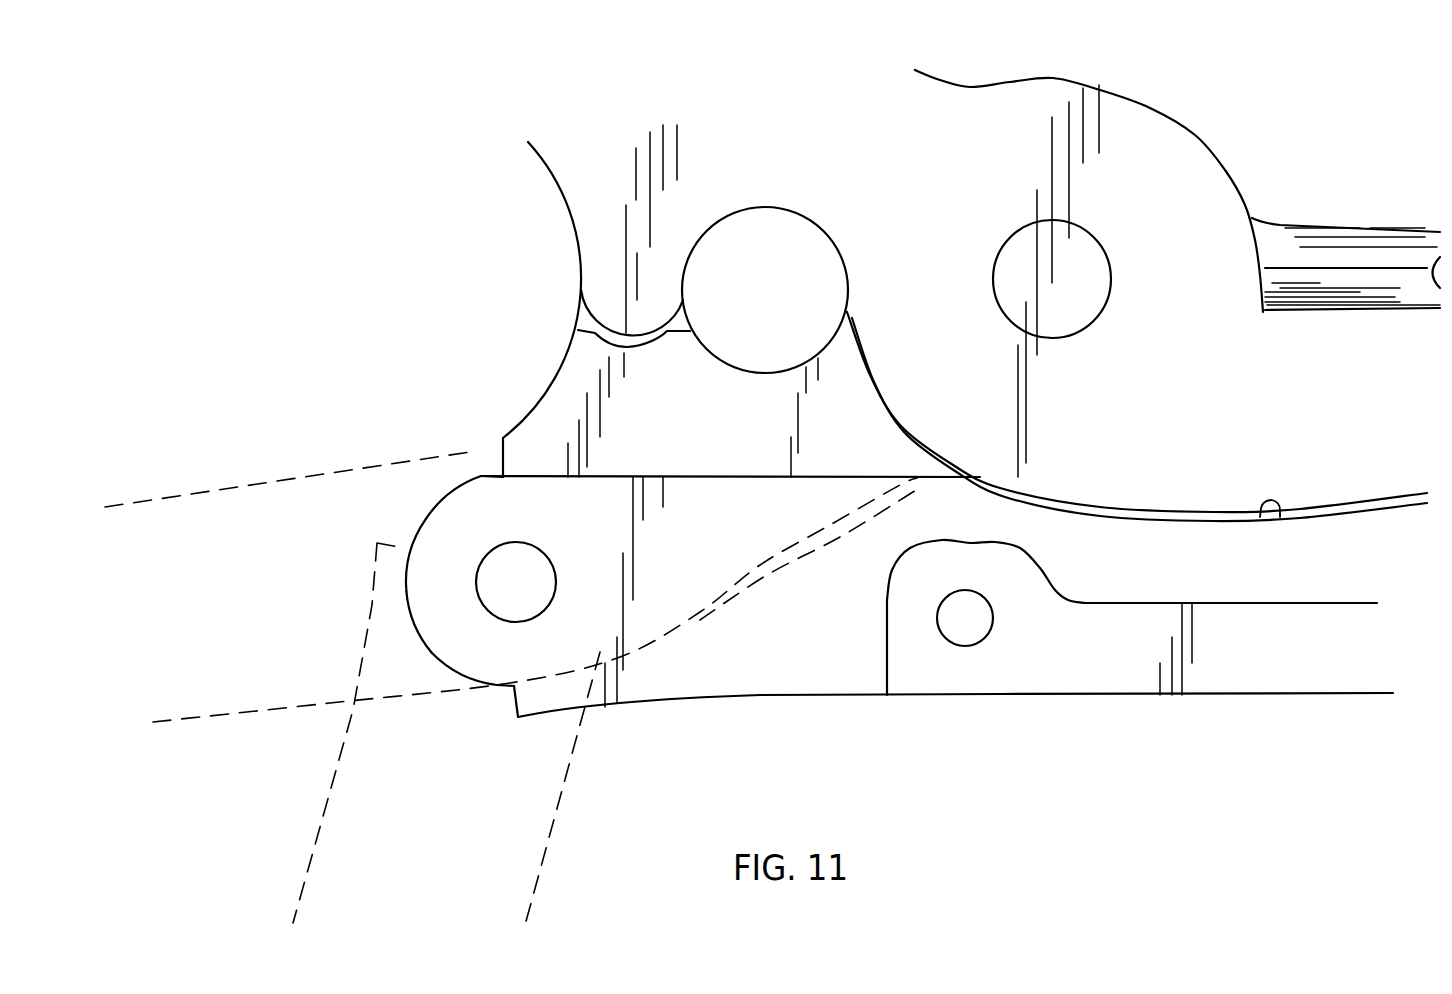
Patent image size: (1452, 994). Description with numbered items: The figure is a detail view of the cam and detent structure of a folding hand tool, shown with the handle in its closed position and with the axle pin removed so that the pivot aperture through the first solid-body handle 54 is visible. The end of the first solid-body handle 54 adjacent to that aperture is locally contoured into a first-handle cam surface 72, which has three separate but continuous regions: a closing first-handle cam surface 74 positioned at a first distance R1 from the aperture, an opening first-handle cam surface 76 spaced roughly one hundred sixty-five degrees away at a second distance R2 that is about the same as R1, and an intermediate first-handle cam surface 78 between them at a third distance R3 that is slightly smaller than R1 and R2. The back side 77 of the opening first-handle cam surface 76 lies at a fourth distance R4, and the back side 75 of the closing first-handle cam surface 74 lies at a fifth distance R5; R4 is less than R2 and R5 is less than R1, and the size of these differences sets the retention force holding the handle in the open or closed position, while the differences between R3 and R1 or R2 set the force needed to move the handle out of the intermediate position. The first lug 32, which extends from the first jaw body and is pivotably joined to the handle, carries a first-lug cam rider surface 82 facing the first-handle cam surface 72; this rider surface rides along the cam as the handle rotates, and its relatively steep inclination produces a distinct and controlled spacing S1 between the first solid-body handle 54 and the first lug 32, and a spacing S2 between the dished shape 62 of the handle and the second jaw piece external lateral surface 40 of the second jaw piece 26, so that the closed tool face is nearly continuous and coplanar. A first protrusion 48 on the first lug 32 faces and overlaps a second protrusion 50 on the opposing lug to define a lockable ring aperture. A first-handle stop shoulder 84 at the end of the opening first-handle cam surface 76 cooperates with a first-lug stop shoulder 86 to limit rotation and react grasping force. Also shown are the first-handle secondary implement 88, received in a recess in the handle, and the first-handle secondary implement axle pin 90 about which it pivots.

The second jaw piece 26 is at (1353, 472).
The first lug 32 is at (560, 403).
The second jaw piece external lateral surface 40 is at (1333, 507).
The first protrusion 48 is at (607, 308).
The second protrusion 50 is at (583, 326).
The first solid-body handle 54 is at (827, 697).
The dished shape 62 is at (1279, 514).
The first-handle cam surface 72 is at (395, 582).
The closing first-handle cam surface 74 is at (497, 688).
The back side of the closing first-handle cam surface 75 is at (606, 670).
The opening first-handle cam surface 76 is at (477, 473).
The back side of the opening first-handle cam surface 77 is at (484, 472).
The intermediate first-handle cam surface 78 is at (405, 596).
The first-lug cam rider surface 82 is at (520, 695).
The first-handle stop shoulder 84 is at (502, 462).
The first-lug stop shoulder 86 is at (513, 702).
The first-handle secondary implement 88 is at (1137, 680).
The first-handle secondary implement axle pin 90 is at (958, 630).
The first distance R1 is at (516, 582).
The second distance R2 is at (516, 582).
The third distance R3 is at (516, 582).
The fourth distance R4 is at (516, 582).
The fifth distance R5 is at (516, 582).
The spacing S1 is at (730, 523).
The spacing S2 is at (1127, 452).